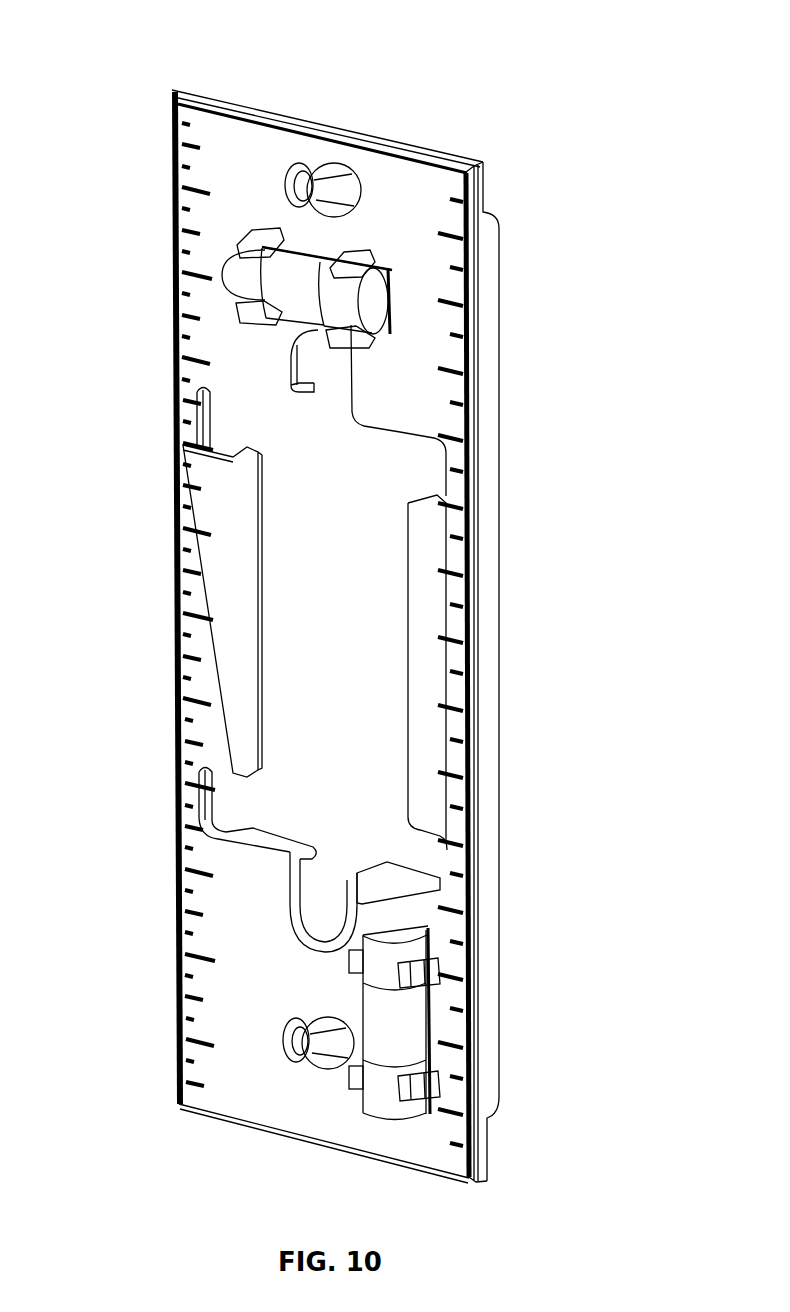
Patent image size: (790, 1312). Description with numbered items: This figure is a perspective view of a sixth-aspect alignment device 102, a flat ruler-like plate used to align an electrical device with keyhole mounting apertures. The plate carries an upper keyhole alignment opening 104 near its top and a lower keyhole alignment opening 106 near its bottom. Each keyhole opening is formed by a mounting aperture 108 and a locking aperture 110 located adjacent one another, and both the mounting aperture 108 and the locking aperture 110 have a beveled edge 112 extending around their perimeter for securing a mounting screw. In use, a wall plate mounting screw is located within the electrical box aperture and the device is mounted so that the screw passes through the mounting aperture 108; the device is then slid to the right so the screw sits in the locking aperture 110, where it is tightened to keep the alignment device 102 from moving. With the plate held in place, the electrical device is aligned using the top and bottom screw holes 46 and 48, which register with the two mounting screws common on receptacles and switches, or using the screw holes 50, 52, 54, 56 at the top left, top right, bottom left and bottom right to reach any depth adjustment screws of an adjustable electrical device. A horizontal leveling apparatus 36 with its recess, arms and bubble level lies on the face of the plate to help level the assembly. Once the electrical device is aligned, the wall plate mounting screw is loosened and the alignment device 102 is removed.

The alignment device 102 is at (339, 591).
The upper keyhole alignment opening 104 is at (328, 128).
The lower keyhole alignment opening 106 is at (292, 1073).
The mounting aperture 108 is at (352, 190).
The locking aperture 110 is at (296, 186).
The beveled edge 112 is at (300, 170).
The horizontal leveling apparatus 36 is at (390, 634).
The screw hole 46 is at (348, 374).
The screw hole 48 is at (312, 896).
The screw hole 50 is at (212, 410).
The screw hole 52 is at (440, 480).
The screw hole 54 is at (210, 800).
The screw hole 56 is at (430, 850).